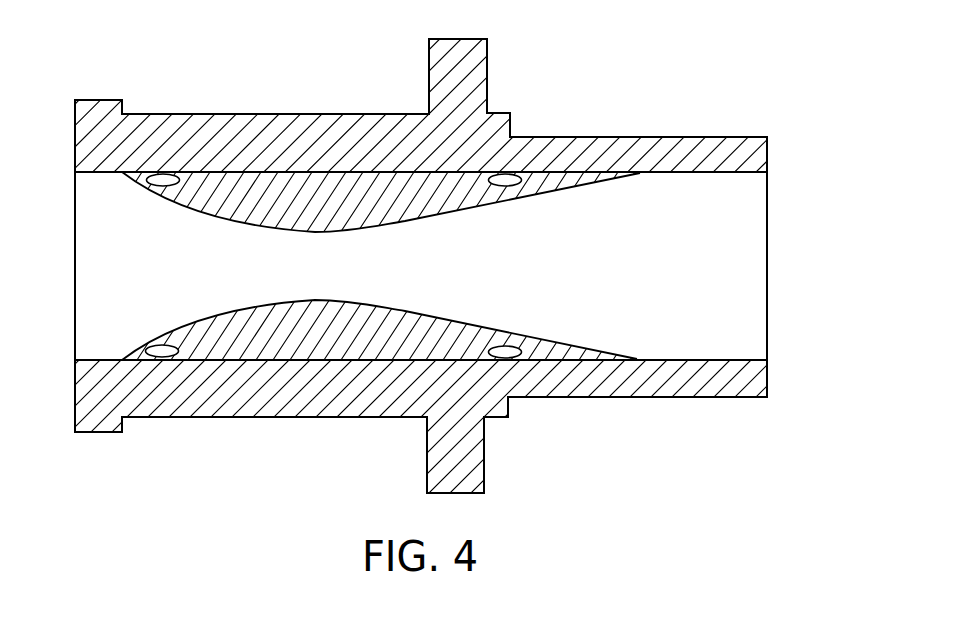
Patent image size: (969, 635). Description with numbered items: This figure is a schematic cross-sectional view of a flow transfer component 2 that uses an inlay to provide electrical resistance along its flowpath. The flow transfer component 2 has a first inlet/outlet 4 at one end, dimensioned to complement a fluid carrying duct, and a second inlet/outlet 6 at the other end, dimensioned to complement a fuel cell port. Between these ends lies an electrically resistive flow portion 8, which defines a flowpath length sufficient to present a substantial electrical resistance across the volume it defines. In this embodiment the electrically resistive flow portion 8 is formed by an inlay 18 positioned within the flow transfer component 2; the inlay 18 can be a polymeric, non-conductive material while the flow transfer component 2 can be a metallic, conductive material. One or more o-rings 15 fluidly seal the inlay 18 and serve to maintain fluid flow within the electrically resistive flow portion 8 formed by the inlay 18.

The flow transfer component 2 is at (222, 430).
The first inlet/outlet 4 is at (75, 315).
The second inlet/outlet 6 is at (768, 275).
The electrically resistive flow portion 8 is at (303, 231).
The o-rings 15 is at (164, 174).
The inlay 18 is at (300, 347).